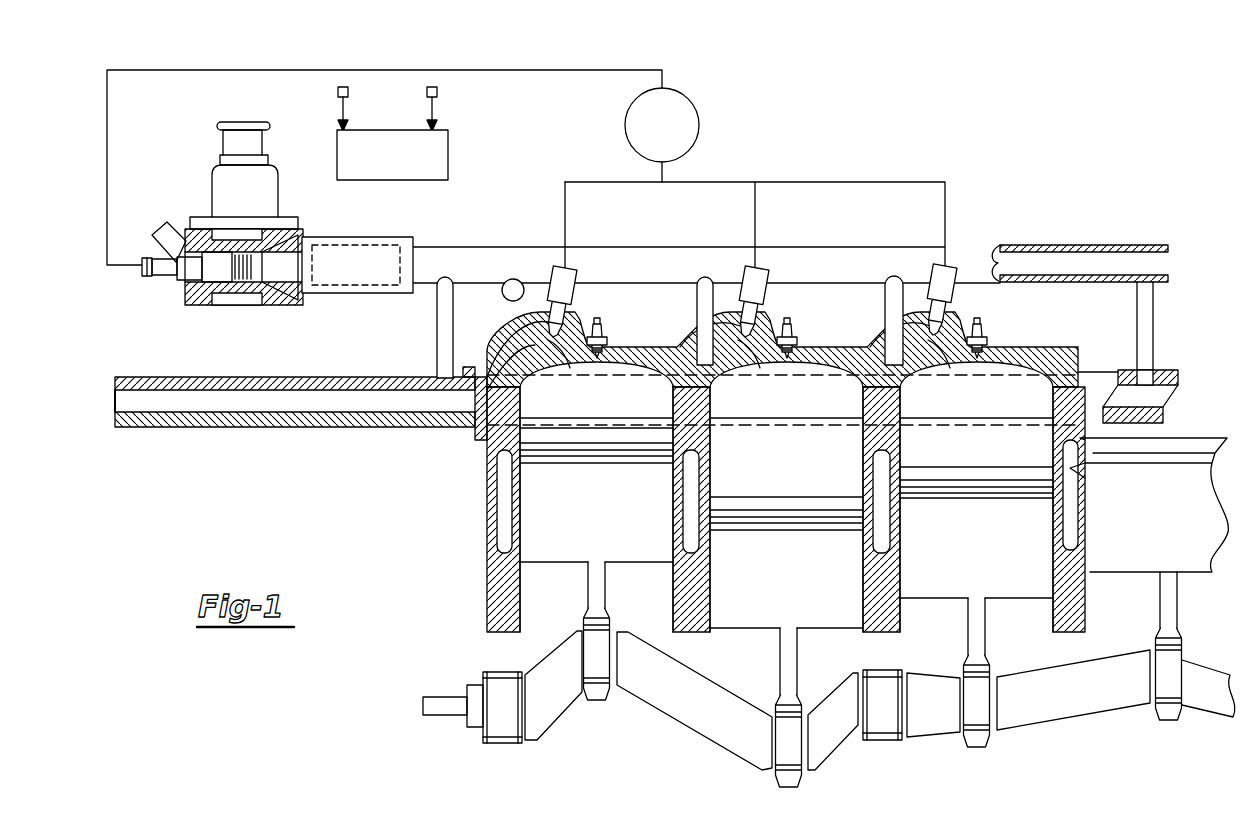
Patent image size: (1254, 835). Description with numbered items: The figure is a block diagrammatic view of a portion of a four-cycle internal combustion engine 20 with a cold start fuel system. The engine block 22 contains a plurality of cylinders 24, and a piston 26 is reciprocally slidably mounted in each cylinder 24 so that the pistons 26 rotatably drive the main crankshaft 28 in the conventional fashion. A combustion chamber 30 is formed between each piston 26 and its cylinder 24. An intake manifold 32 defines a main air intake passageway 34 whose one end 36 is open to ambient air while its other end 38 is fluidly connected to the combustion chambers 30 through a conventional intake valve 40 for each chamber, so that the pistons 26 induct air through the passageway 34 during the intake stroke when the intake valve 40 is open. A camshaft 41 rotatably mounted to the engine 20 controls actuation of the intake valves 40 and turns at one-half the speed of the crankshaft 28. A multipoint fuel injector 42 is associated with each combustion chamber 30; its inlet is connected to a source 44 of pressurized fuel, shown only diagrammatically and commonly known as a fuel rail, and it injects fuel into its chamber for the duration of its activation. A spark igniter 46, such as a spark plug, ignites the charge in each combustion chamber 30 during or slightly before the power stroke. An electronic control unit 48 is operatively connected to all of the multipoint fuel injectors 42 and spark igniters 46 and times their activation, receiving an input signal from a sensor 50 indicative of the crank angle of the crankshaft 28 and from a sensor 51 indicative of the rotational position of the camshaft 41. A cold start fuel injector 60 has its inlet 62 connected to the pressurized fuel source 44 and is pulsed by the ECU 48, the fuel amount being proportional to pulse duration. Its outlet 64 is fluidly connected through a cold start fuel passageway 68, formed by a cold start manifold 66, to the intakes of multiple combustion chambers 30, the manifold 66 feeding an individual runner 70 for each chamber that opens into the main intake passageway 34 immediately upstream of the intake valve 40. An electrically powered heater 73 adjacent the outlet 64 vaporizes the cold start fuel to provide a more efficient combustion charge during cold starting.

The internal combustion engine 20 is at (380, 518).
The engine block 22 is at (487, 562).
The cylinder 24 is at (520, 605).
The piston 26 is at (600, 523).
The main crankshaft 28 is at (478, 758).
The combustion chamber 30 is at (619, 408).
The intake manifold 32 is at (160, 427).
The main air intake passageway 34 is at (168, 400).
The end open to ambient air 36 is at (115, 400).
The other end of intake manifold 38 is at (520, 336).
The intake valve 40 is at (553, 357).
The camshaft 41 is at (513, 279).
The multipoint fuel injector 42 is at (757, 283).
The source of pressurized fuel 44 is at (700, 108).
The spark igniter 46 is at (795, 327).
The electronic control unit 48 is at (393, 130).
The sensor 50 is at (343, 87).
The sensor 51 is at (437, 92).
The cold start fuel injector 60 is at (240, 122).
The inlet 62 is at (160, 278).
The outlet 64 is at (290, 268).
The cold start manifold 66 is at (850, 247).
The cold start fuel passageway 68 is at (1150, 265).
The runner 70 is at (1150, 315).
The electrically powered heater 73 is at (375, 240).